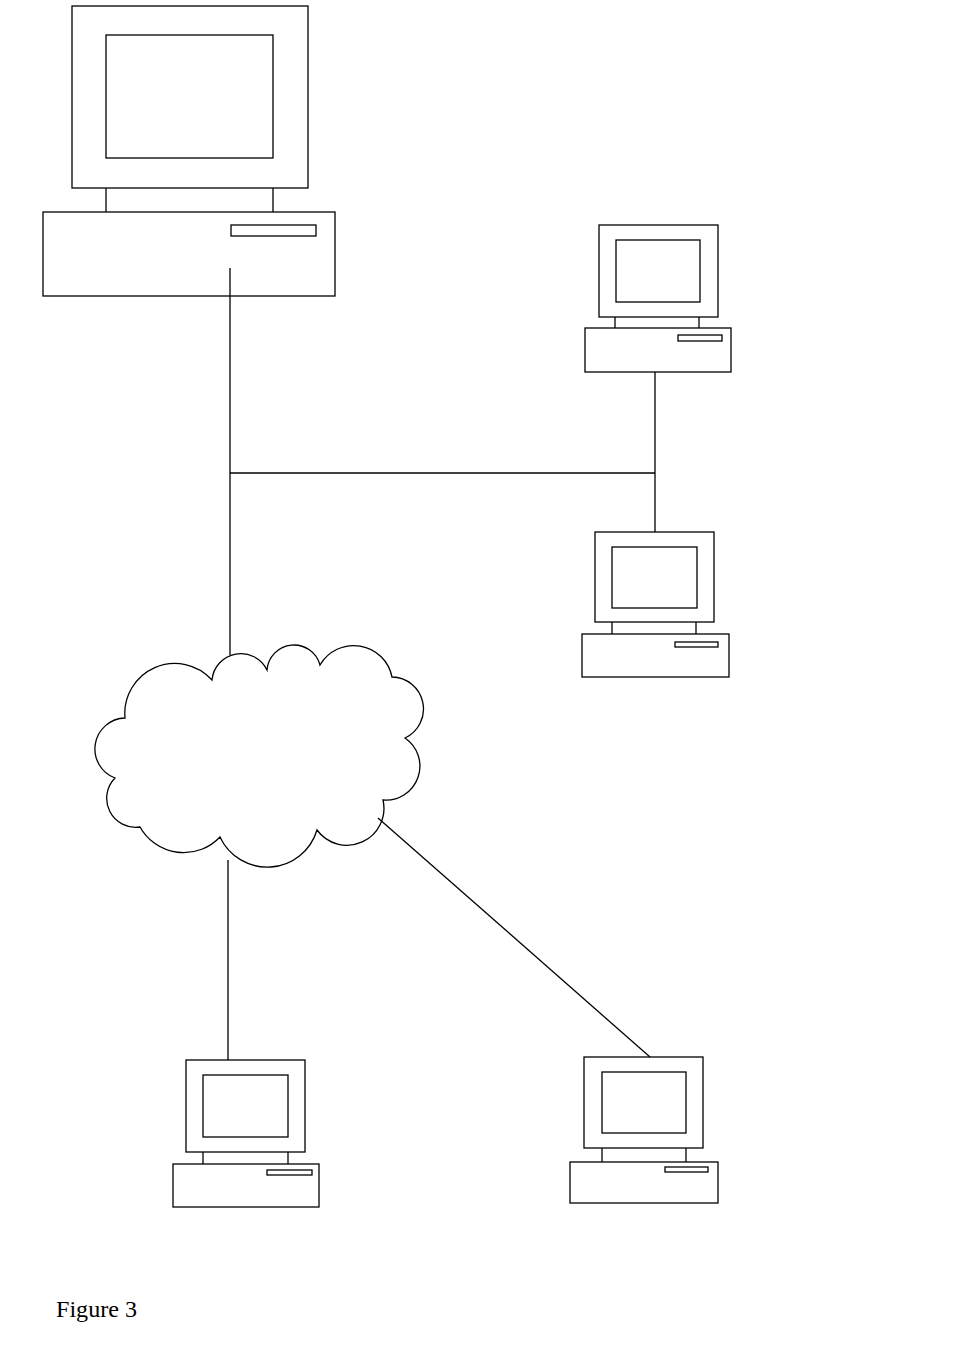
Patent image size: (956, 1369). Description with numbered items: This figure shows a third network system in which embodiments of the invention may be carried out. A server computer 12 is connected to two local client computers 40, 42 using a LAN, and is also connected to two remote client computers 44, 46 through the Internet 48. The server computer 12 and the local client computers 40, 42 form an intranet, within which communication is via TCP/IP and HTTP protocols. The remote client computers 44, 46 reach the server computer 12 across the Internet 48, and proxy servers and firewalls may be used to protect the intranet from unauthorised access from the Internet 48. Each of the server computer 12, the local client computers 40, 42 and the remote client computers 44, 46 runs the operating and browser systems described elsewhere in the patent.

The server computer 12 is at (309, 102).
The local client computer 40 is at (720, 263).
The local client computer 42 is at (716, 583).
The remote client computer 44 is at (183, 1135).
The remote client computer 46 is at (710, 1125).
The Internet 48 is at (259, 756).